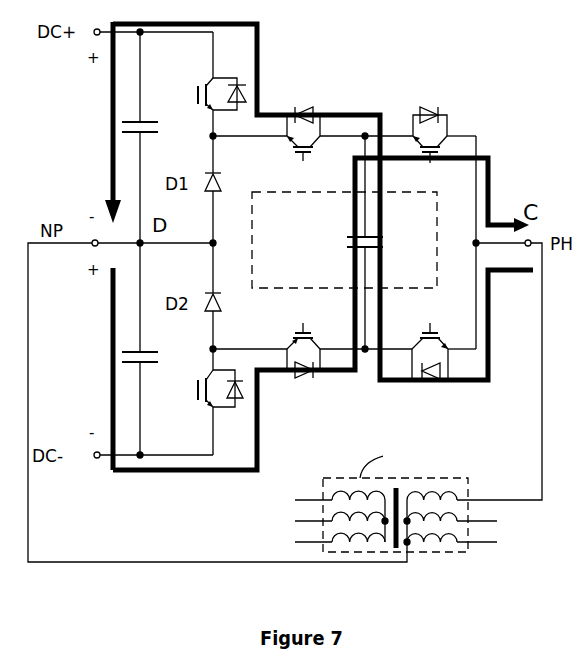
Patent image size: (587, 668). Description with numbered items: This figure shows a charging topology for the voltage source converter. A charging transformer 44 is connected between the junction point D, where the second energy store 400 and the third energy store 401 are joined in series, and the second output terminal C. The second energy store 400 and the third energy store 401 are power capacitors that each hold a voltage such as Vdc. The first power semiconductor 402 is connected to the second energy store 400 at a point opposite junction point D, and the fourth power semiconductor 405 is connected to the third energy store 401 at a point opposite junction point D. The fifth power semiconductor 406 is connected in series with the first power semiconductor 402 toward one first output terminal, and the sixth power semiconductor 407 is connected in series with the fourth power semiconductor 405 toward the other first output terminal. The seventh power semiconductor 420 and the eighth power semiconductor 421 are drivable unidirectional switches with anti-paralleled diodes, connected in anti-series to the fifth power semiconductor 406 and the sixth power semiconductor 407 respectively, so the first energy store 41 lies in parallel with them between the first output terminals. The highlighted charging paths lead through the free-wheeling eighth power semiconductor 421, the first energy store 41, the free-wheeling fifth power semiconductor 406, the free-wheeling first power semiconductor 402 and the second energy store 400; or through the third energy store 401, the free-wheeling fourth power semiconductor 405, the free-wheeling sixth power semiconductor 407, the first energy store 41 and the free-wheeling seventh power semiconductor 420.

The second energy store 400 is at (111, 137).
The third energy store 401 is at (112, 349).
The first power semiconductor 402 is at (198, 95).
The fourth power semiconductor 405 is at (198, 390).
The fifth power semiconductor 406 is at (307, 118).
The sixth power semiconductor 407 is at (307, 367).
The seventh power semiconductor 420 is at (431, 117).
The eighth power semiconductor 421 is at (430, 369).
The first energy store 41 is at (344, 242).
The charging transformer 44 is at (402, 521).